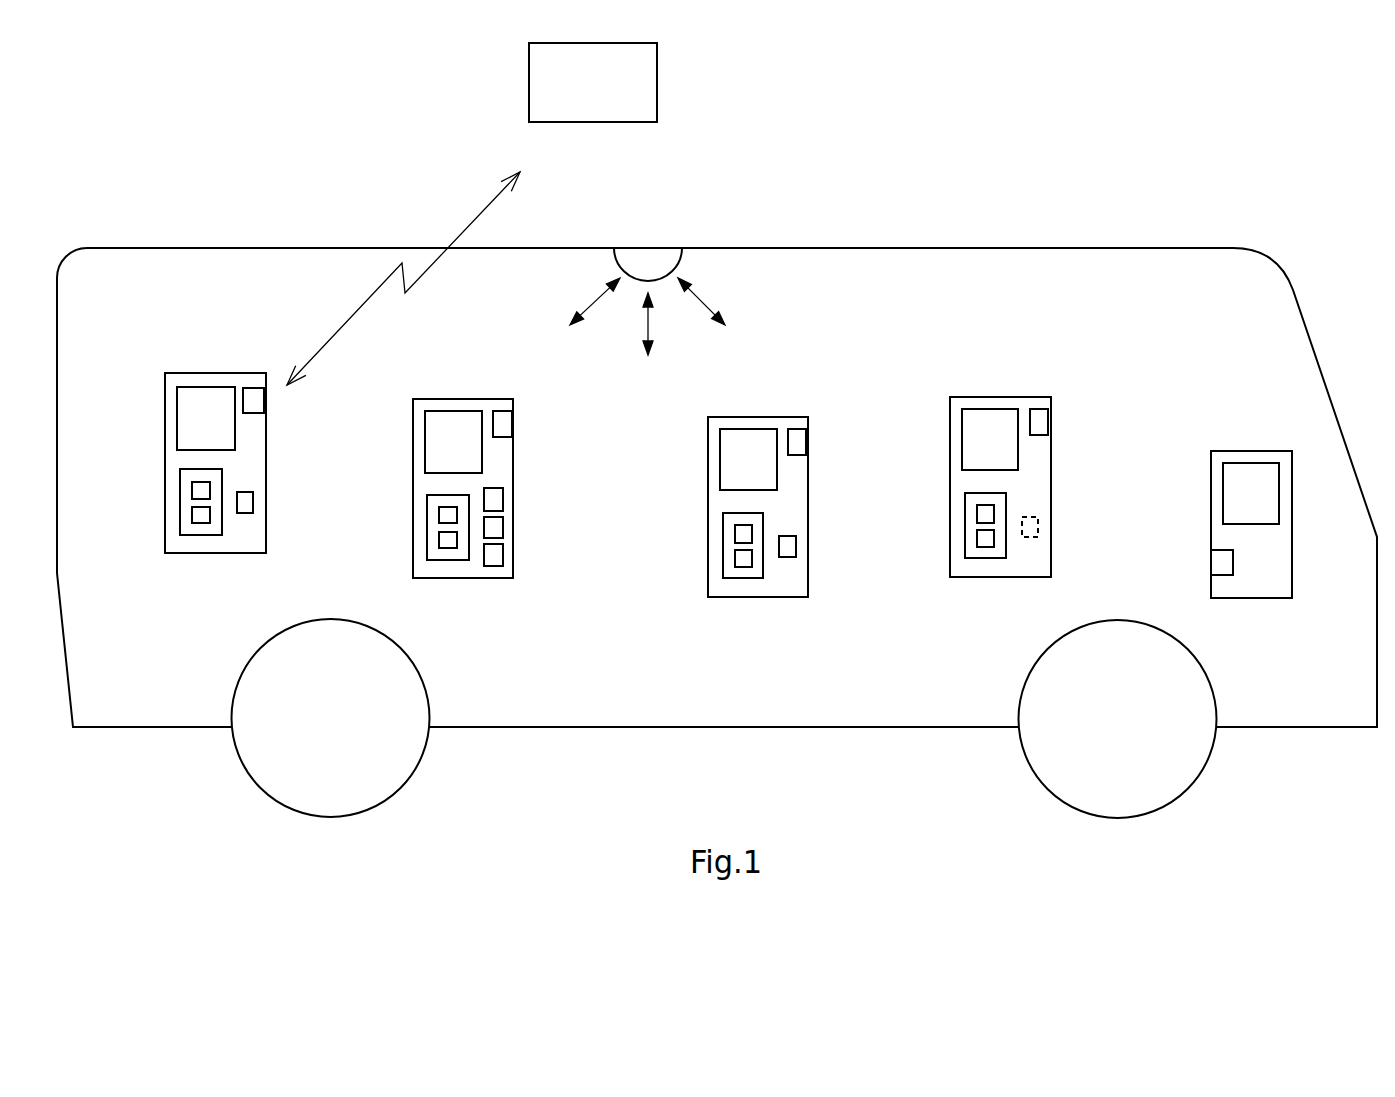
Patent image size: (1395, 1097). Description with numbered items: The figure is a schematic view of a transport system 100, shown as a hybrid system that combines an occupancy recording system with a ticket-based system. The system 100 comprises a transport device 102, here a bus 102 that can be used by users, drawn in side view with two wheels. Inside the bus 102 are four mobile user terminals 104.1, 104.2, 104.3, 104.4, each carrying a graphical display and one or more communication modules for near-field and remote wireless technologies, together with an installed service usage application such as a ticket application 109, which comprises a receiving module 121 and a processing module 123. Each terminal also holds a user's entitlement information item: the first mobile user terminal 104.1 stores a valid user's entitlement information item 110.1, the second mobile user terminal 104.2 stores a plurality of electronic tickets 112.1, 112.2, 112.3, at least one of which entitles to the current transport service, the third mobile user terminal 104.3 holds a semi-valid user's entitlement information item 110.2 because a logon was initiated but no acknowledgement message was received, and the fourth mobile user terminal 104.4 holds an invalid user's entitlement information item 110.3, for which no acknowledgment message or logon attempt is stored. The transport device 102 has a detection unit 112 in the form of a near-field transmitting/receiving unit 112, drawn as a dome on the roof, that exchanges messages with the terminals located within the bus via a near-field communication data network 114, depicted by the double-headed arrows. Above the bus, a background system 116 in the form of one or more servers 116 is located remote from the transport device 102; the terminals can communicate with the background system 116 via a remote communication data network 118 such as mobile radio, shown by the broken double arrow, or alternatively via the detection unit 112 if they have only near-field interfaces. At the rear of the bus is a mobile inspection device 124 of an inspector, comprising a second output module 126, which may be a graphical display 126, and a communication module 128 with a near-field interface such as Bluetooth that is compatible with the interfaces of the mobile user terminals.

The transport system 100 is at (1162, 178).
The transport device 102 is at (922, 247).
The first mobile user terminal 104.1 is at (242, 373).
The second mobile user terminal 104.2 is at (487, 399).
The third mobile user terminal 104.3 is at (782, 417).
The fourth mobile user terminal 104.4 is at (1023, 397).
The ticket application 109 is at (427, 503).
The valid user's entitlement information item 110.1 is at (245, 513).
The semi-valid user's entitlement information item 110.2 is at (787, 557).
The invalid user's entitlement information item 110.3 is at (1025, 537).
The detection unit 112 is at (638, 247).
The first electronic ticket 112.1 is at (503, 495).
The second electronic ticket 112.2 is at (503, 526).
The third electronic ticket 112.3 is at (503, 553).
The near-field communication data network 114 is at (703, 297).
The background system 116 is at (608, 93).
The remote communication data network 118 is at (472, 222).
The receiving module 121 is at (439, 508).
The processing module 123 is at (439, 540).
The mobile inspection device 124 is at (1272, 450).
The second output module 126 is at (1237, 461).
The communication module 128 is at (1210, 563).